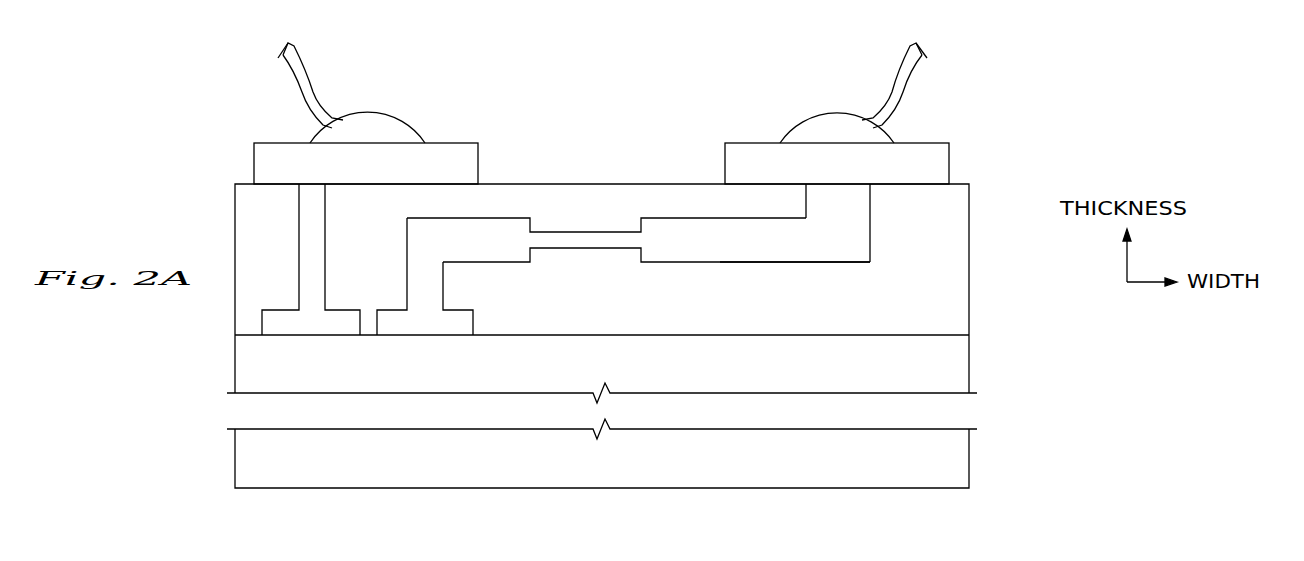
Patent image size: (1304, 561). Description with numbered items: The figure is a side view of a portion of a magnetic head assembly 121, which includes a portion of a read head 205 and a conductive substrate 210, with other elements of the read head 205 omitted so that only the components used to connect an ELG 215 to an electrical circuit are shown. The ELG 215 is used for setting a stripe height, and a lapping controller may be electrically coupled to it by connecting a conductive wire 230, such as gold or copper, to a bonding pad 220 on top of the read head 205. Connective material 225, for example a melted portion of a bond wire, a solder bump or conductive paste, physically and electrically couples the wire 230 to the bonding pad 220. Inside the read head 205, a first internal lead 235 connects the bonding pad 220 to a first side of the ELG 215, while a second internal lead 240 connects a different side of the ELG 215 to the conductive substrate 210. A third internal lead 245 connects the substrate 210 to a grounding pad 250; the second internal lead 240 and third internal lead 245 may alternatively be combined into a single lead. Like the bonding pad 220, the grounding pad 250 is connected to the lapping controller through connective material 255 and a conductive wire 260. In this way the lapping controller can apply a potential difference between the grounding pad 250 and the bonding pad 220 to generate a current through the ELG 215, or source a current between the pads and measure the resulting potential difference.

The magnetic head assembly 121 is at (1053, 173).
The read head 205 is at (1005, 184).
The conductive substrate 210 is at (1005, 335).
The ELG 215 is at (548, 230).
The bonding pad 220 is at (951, 157).
The connective material 225 is at (805, 120).
The wire 230 is at (892, 67).
The first internal lead 235 is at (720, 263).
The second internal lead 240 is at (468, 263).
The third internal lead 245 is at (327, 252).
The grounding pad 250 is at (254, 152).
The connective material 255 is at (401, 120).
The conductive wire 260 is at (312, 68).